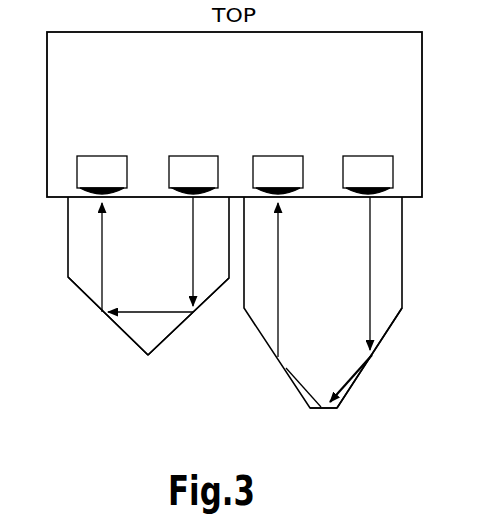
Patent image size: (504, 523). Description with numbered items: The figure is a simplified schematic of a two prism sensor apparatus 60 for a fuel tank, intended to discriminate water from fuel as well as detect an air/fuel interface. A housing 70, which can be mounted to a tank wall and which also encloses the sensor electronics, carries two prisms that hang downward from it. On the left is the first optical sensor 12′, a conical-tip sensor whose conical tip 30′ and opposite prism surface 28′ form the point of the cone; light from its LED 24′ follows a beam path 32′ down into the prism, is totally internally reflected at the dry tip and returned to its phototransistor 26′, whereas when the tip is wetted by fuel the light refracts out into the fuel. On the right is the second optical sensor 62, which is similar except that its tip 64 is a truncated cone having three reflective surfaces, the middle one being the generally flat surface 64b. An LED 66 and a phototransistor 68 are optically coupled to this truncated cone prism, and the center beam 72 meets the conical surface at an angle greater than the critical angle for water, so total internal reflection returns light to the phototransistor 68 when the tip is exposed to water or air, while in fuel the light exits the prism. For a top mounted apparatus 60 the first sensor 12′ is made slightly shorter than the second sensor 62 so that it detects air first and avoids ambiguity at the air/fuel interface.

The housing 70 is at (422, 97).
The first detector D1 26′ is at (94, 156).
The first light source Q1 24′ is at (189, 156).
The phototransistor 68 is at (279, 156).
The LED 66 is at (362, 156).
The first optical sensor 12′ is at (85, 342).
The first reflecting face of prism 28′ is at (87, 269).
The conical tip 30′ is at (174, 335).
The light beam path in first prism 32′ is at (102, 255).
The two prism sensor apparatus 60 is at (152, 394).
The second optical sensor 62 is at (497, 279).
The truncated cone prism tip 64 is at (400, 320).
The flat surface 64b is at (309, 410).
The center beam 72 is at (370, 238).